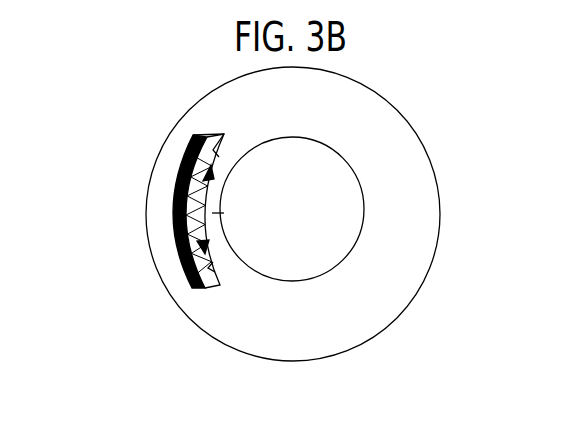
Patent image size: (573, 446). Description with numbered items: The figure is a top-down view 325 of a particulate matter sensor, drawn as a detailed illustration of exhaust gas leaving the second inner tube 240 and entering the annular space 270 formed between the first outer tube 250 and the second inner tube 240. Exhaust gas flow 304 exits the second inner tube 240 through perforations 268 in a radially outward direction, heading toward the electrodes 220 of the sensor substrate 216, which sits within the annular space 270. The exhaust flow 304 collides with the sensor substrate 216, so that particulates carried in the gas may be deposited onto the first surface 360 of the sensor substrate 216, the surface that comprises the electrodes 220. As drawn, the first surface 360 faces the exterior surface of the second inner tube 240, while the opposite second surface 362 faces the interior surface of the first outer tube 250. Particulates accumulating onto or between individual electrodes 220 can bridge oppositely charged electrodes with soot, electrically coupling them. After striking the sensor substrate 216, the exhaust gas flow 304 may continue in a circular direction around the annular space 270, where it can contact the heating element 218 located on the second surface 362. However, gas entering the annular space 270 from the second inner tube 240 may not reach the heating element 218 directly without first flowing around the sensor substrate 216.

The sensor substrate 216 is at (217, 134).
The heating element 218 is at (180, 262).
The electrodes 220 is at (216, 266).
The second inner tube 240 is at (315, 138).
The first outer tube 250 is at (409, 122).
The perforations 268 is at (238, 222).
The annular space 270 is at (373, 316).
The exhaust gas flow 304 is at (220, 210).
The top-down view 325 is at (172, 364).
The first surface 360 is at (234, 157).
The second surface 362 is at (160, 169).